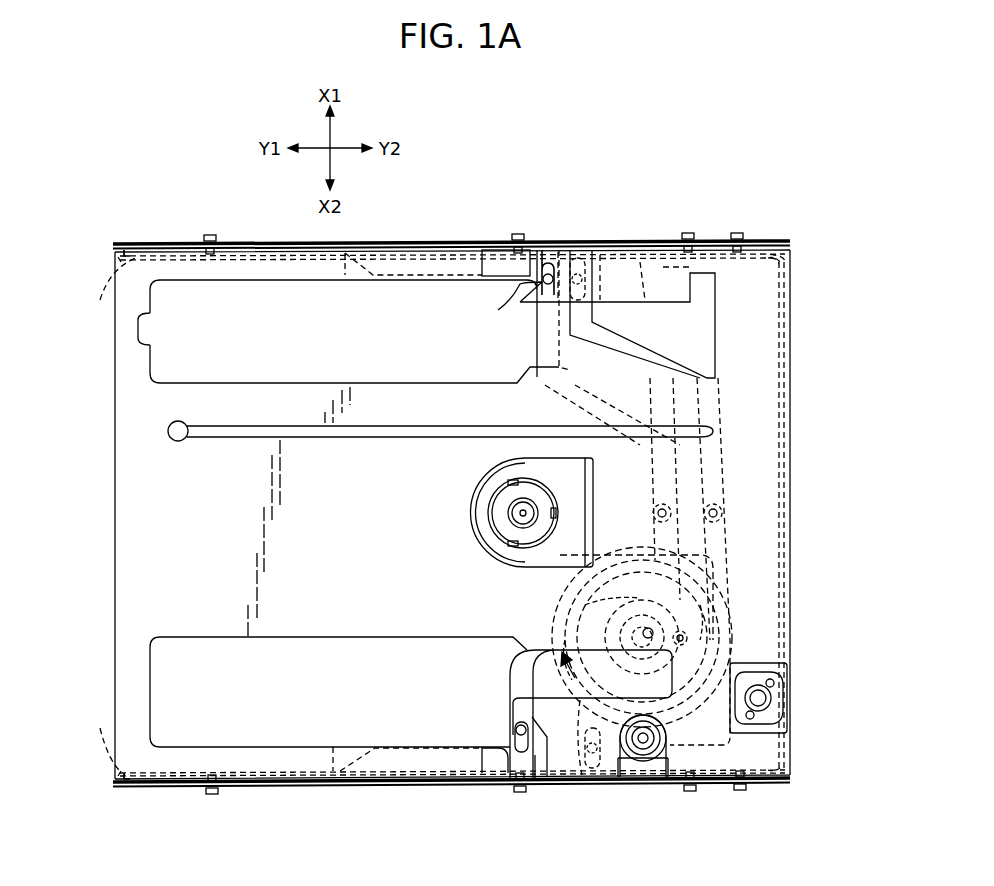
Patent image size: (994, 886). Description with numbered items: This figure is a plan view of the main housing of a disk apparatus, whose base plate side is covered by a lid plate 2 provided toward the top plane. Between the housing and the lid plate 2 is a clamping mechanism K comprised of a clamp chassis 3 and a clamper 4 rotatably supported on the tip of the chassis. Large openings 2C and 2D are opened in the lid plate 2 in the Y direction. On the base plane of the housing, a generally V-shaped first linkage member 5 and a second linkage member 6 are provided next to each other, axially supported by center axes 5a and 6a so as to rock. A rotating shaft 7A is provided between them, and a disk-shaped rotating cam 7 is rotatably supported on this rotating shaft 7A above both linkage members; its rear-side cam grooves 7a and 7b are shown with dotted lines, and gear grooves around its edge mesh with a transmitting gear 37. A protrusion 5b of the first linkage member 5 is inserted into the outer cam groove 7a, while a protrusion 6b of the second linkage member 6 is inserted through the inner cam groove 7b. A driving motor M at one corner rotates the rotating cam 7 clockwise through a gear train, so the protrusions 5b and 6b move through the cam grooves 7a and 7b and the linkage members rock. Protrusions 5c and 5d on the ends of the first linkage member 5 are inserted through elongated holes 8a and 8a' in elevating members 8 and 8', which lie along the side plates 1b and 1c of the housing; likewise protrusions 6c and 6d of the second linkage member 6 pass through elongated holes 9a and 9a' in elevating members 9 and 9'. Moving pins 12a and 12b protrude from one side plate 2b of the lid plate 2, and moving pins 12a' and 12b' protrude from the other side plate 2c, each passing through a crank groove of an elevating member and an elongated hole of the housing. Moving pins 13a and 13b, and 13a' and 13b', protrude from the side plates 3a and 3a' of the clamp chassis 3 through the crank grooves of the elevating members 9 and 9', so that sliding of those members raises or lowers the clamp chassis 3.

The side plate 1b is at (130, 788).
The side plate 1c is at (135, 242).
The lid plate 2 is at (137, 408).
The side plate 2b is at (100, 739).
The side plate 2c is at (108, 293).
The opening 2C is at (290, 384).
The opening 2D is at (306, 636).
The clamp chassis 3 is at (565, 470).
The side plate 3a is at (809, 755).
The side plate 3a' is at (813, 259).
The clamper 4 is at (475, 527).
The first linkage member 5 is at (508, 672).
The center axis 5a is at (655, 506).
The protrusion 5b is at (570, 630).
The protrusion 5c is at (518, 730).
The protrusion 5d is at (540, 290).
The second linkage member 6 is at (620, 348).
The center axis 6a is at (725, 502).
The protrusion 6b is at (690, 640).
The protrusion 6c is at (593, 770).
The protrusion 6d is at (603, 255).
The rotating cam 7 is at (552, 606).
The cam groove 7a is at (582, 603).
The cam groove 7b is at (702, 606).
The rotating shaft 7A is at (686, 638).
The elevating member 8 is at (420, 791).
The elevating member 8' is at (437, 234).
The elongated hole 8a is at (540, 788).
The elongated hole 8a' is at (562, 249).
The elevating member 9 is at (643, 787).
The elevating member 9' is at (658, 229).
The elongated hole 9a is at (597, 773).
The elongated hole 9a' is at (593, 251).
The moving pin 12a is at (218, 807).
The moving pin 12a' is at (217, 218).
The moving pin 12b is at (512, 810).
The moving pin 12b' is at (517, 215).
The moving pin 13a is at (697, 804).
The moving pin 13a' is at (692, 190).
The moving pin 13b is at (752, 804).
The moving pin 13b' is at (744, 190).
The transmitting gear 37 is at (645, 752).
The clamping mechanism K is at (466, 502).
The driving motor M is at (772, 696).